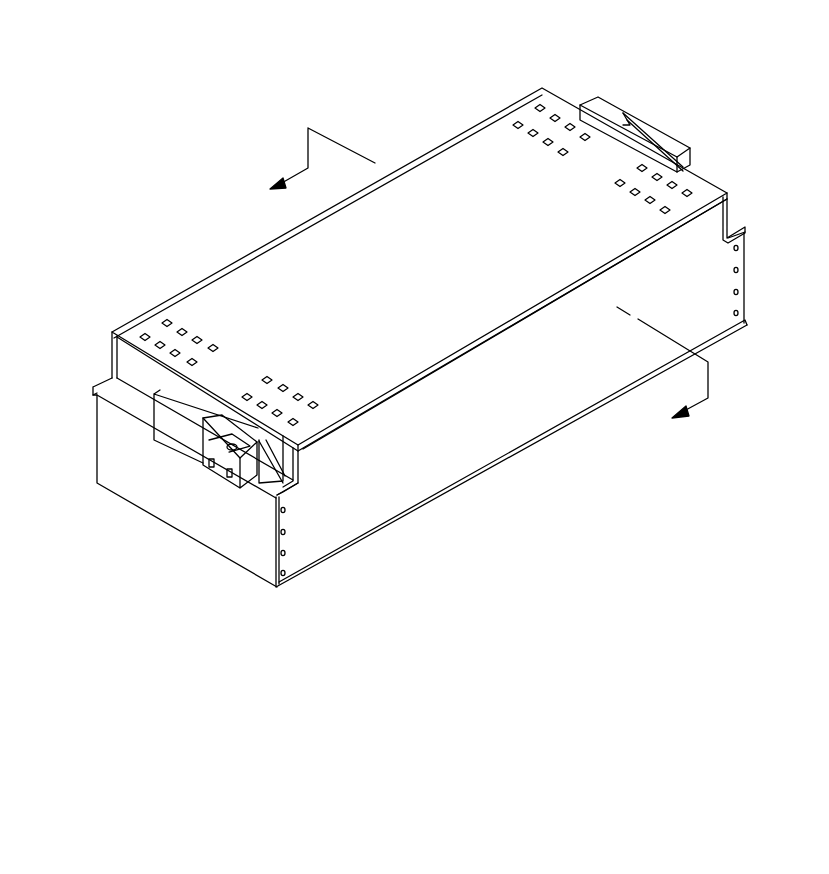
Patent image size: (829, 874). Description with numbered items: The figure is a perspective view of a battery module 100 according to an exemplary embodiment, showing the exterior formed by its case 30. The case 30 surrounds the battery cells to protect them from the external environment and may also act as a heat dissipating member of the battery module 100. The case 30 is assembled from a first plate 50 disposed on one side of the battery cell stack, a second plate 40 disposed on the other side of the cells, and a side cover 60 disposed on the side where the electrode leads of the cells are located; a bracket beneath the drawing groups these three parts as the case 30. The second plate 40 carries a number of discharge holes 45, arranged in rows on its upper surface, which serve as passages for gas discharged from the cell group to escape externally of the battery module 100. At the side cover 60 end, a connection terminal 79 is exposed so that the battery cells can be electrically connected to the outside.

The battery module 100 is at (122, 114).
The case 30 is at (178, 666).
The second plate 40 is at (360, 380).
The discharge hole 45 is at (522, 122).
The first plate 50 is at (310, 515).
The side cover 60 is at (235, 535).
The connection terminal 79 is at (197, 453).